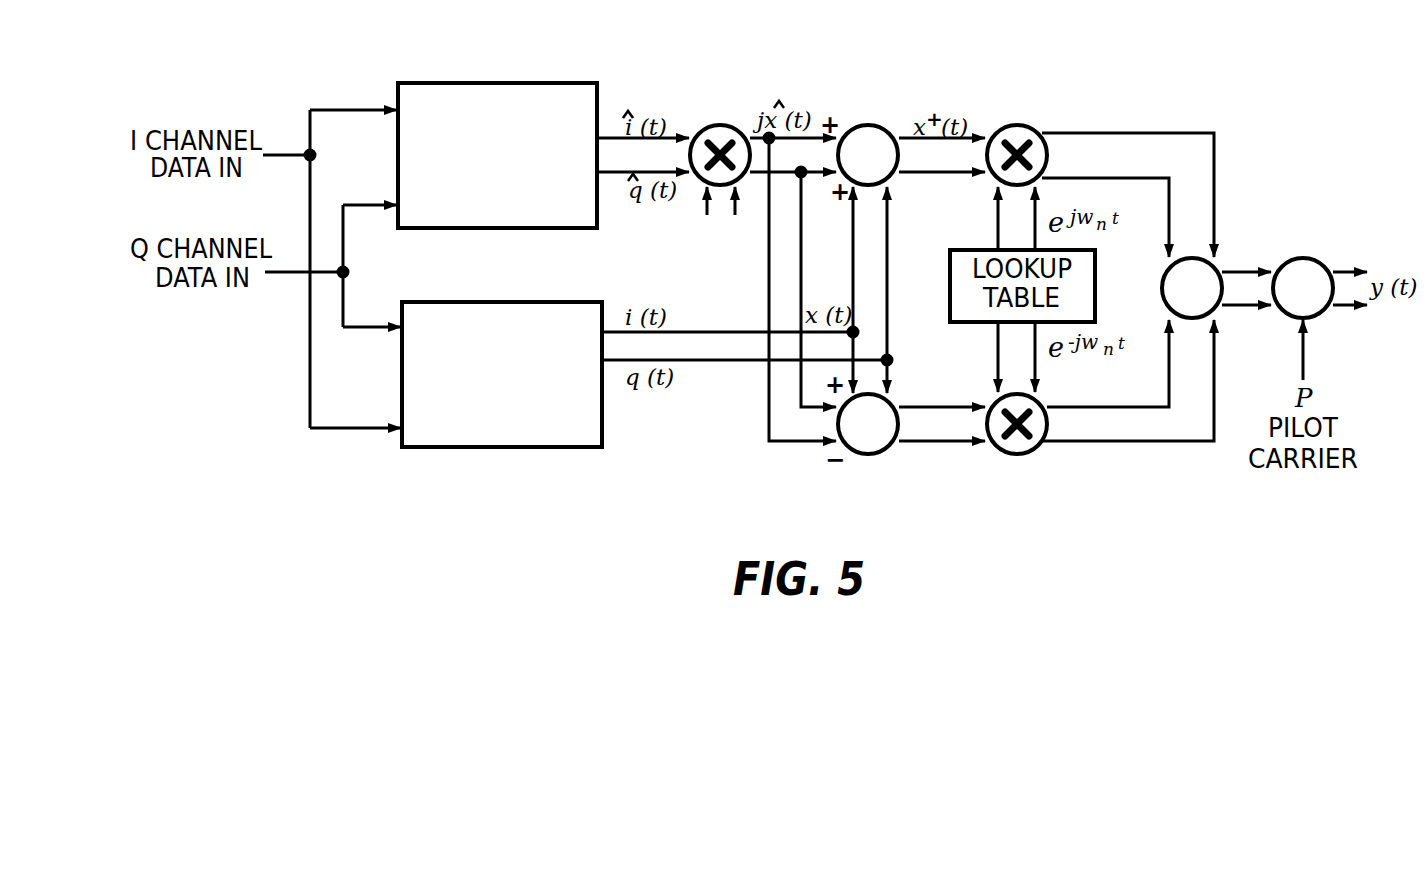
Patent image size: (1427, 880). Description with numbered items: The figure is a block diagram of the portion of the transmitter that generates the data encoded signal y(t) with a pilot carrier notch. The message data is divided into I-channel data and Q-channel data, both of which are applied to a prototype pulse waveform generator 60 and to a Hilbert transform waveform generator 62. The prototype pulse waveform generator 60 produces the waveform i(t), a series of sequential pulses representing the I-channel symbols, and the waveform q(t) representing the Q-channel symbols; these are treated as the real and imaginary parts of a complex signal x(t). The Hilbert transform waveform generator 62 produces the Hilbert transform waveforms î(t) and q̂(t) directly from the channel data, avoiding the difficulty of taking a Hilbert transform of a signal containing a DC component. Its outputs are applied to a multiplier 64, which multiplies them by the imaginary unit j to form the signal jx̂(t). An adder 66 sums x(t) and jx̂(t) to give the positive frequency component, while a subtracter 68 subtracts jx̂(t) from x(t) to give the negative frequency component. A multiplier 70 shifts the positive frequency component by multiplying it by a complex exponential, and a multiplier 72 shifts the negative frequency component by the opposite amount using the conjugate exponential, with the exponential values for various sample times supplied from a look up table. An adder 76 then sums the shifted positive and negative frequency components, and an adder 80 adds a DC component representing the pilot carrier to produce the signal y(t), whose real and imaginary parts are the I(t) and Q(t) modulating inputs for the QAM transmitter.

The prototype pulse waveform generator 60 is at (535, 302).
The Hilbert transform waveform generator 62 is at (535, 83).
The multiplier 64 is at (716, 125).
The adder 66 is at (866, 125).
The subtracter 68 is at (890, 452).
The multiplier 70 is at (1013, 125).
The multiplier 72 is at (1040, 452).
The adder 76 is at (1166, 270).
The adder 80 is at (1300, 258).